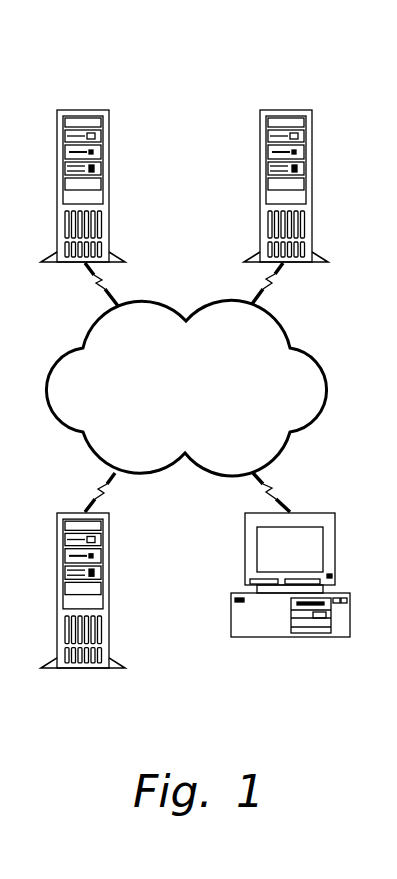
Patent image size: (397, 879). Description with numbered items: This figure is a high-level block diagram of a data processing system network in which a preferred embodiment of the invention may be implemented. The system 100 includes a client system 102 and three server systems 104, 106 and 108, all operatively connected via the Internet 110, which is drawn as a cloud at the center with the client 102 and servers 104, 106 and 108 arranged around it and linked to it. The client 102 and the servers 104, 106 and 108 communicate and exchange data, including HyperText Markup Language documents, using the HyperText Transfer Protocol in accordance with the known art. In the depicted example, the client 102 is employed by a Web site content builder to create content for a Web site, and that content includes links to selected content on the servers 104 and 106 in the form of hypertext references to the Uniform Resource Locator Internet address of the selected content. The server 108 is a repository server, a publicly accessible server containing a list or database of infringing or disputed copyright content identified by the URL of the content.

The data processing system network 100 is at (210, 547).
The client system 102 is at (322, 637).
The server system 104 is at (70, 668).
The server system 106 is at (88, 110).
The repository server 108 is at (292, 110).
The Internet 110 is at (322, 352).